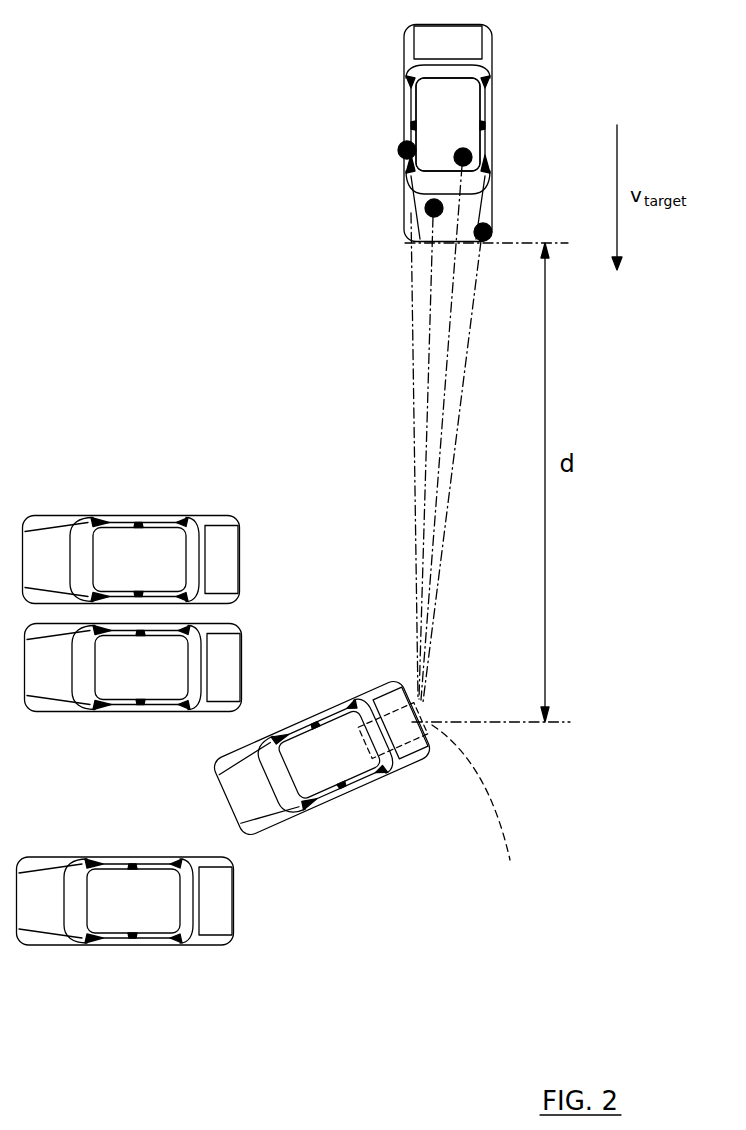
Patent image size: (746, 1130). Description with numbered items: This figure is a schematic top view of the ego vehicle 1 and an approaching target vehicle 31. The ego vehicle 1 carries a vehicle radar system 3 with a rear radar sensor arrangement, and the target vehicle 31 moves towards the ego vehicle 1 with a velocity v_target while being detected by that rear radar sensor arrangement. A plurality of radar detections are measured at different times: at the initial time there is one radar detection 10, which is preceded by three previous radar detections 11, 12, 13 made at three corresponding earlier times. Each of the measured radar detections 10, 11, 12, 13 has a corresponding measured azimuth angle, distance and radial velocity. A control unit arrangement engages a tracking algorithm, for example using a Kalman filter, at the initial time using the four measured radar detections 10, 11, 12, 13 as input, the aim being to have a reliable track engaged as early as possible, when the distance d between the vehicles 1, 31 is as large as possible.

The ego vehicle 1 is at (333, 763).
The vehicle radar system 3 is at (475, 811).
The radar detection 10 is at (492, 230).
The previous radar detection 11 is at (425, 211).
The previous radar detection 12 is at (472, 157).
The previous radar detection 13 is at (398, 148).
The target vehicle 31 is at (450, 103).